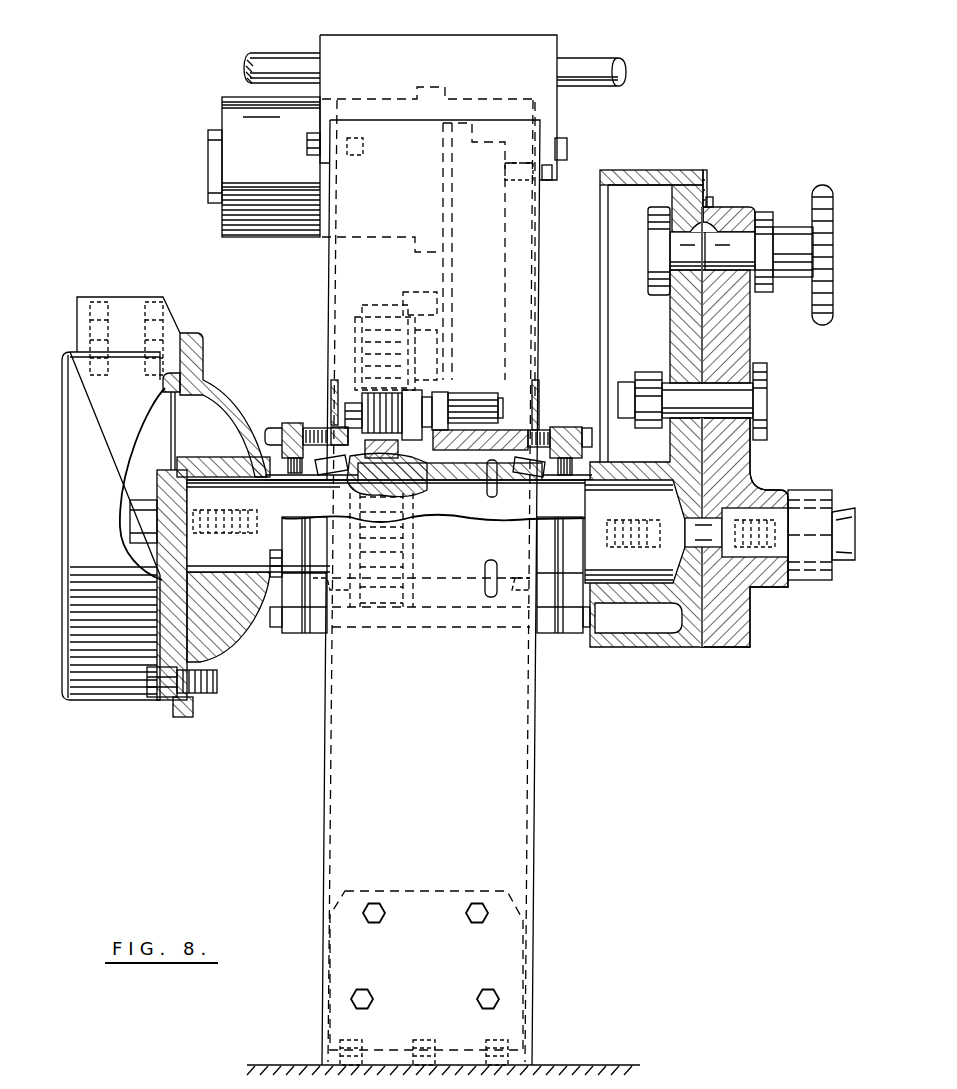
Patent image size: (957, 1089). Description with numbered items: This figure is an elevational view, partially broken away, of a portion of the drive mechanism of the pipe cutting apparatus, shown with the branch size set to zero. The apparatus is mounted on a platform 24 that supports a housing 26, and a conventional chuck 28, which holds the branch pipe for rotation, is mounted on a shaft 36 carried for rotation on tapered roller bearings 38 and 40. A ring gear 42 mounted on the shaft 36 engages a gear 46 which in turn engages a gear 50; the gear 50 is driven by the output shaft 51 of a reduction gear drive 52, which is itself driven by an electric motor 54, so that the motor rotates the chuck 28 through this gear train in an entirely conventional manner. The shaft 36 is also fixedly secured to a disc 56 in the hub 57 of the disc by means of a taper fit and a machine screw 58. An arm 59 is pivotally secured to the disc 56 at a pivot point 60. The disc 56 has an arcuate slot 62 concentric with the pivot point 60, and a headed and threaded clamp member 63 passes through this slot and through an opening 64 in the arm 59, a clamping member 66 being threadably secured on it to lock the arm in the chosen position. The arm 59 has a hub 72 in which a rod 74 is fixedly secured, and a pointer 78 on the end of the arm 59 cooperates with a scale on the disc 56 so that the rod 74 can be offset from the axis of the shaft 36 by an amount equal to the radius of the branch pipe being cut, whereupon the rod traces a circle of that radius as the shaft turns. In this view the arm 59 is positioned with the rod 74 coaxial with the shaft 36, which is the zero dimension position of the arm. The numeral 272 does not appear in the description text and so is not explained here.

The platform 24 is at (588, 1066).
The housing 26 is at (320, 793).
The chuck 28 is at (100, 720).
The shaft 36 is at (243, 440).
The tapered roller bearing 38 is at (328, 430).
The tapered roller bearing 40 is at (542, 473).
The ring gear 42 is at (423, 485).
The gear 46 is at (397, 403).
The gear 50 is at (435, 328).
The output shaft 51 is at (443, 310).
The reduction gear drive 52 is at (505, 403).
The electric motor 54 is at (228, 118).
The disc 56 is at (690, 178).
The hub 57 is at (624, 463).
The machine screw 58 is at (683, 545).
The arm 59 is at (750, 333).
The pivot point 60 is at (748, 450).
The arcuate slot 62 is at (707, 212).
The clamp member 63 is at (786, 185).
The opening 64 is at (740, 272).
The clamping member 66 is at (832, 185).
The hub 72 is at (807, 490).
The rod 74 is at (838, 510).
The pointer 78 is at (713, 200).
The shaft 272 is at (597, 64).